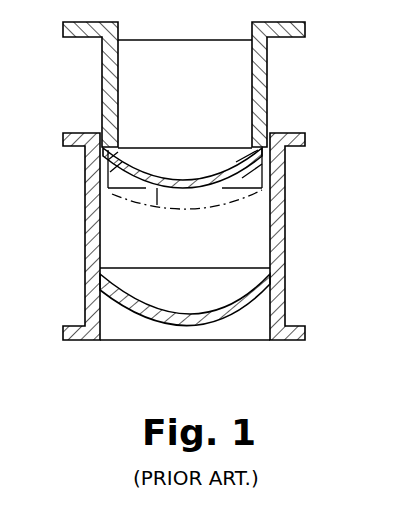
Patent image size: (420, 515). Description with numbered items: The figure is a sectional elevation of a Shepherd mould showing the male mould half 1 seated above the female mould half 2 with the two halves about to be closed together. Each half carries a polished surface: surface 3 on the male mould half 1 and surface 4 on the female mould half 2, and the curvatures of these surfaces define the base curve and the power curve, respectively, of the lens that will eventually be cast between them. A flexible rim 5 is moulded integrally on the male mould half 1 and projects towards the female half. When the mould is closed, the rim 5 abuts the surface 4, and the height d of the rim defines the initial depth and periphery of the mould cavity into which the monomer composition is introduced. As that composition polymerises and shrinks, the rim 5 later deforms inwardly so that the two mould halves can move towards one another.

The male mould half 1 is at (268, 80).
The female mould half 2 is at (287, 243).
The surface of male mould half 3 is at (218, 172).
The surface of female mould half 4 is at (212, 322).
The flexible rim 5 is at (262, 172).
The height of the rim d is at (160, 200).